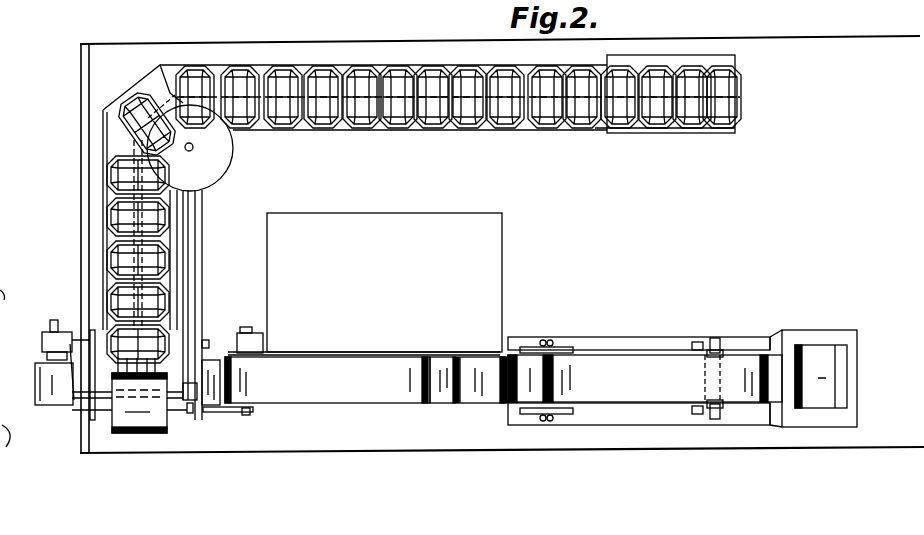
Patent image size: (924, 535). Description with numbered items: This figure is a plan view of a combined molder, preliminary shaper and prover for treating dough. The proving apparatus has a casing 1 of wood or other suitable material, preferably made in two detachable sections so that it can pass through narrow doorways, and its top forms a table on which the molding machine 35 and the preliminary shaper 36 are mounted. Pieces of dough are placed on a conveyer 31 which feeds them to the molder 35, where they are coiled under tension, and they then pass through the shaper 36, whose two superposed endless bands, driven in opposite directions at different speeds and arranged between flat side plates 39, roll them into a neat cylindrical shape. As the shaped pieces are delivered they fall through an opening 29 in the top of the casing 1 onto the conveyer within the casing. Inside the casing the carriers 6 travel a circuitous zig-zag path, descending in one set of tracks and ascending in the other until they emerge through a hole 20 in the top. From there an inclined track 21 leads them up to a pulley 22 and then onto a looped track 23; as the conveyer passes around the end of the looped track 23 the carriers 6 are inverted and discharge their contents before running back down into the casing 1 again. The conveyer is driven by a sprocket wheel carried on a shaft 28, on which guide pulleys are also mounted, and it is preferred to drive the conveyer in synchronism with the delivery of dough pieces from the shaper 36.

The casing 1 is at (462, 244).
The carriers 6 is at (393, 131).
The hole 20 is at (736, 128).
The inclined track 21 is at (450, 126).
The pulley 22 is at (215, 158).
The looped track 23 is at (108, 278).
The shaft 28 is at (208, 340).
The opening 29 is at (838, 378).
The conveyer 31 is at (63, 398).
The molding machine 35 is at (384, 282).
The preliminary shaper 36 is at (492, 362).
The flat side plates 39 is at (666, 352).